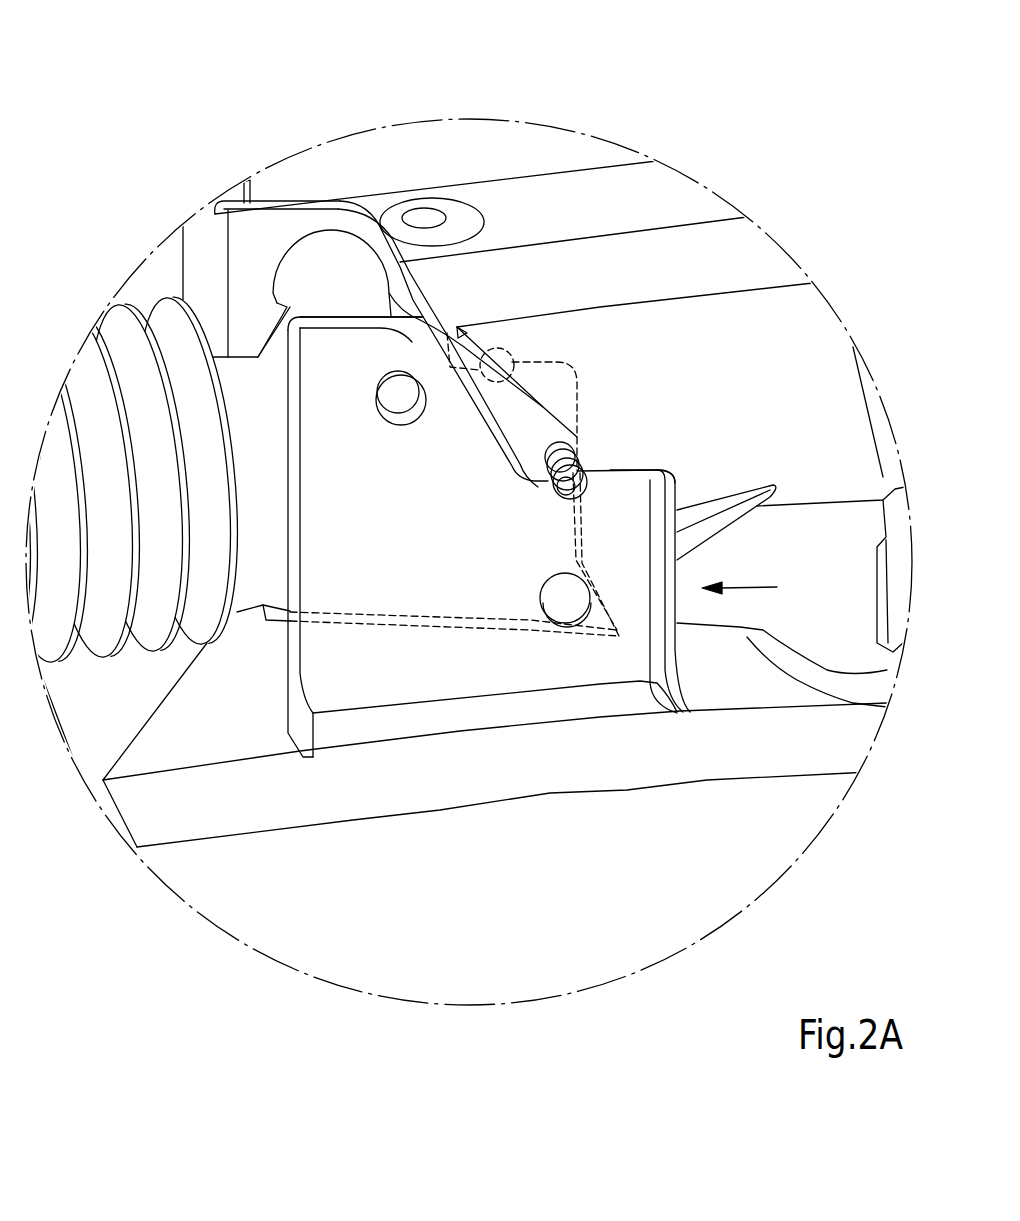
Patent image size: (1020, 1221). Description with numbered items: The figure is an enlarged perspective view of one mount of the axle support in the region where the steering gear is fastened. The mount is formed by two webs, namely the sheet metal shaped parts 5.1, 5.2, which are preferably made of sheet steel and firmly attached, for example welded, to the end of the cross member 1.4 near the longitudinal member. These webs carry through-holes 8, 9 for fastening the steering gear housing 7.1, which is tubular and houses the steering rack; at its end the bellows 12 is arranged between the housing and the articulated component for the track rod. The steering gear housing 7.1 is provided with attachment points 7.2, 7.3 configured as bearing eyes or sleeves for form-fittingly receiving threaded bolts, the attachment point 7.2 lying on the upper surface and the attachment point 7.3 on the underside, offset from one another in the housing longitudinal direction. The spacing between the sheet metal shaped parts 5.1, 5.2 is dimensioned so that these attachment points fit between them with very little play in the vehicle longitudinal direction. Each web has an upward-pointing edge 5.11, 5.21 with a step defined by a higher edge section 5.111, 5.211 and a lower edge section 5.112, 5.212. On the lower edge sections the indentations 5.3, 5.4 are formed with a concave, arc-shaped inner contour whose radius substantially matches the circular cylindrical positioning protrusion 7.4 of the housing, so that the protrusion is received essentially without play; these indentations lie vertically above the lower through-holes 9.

The cross member 1.4 is at (352, 953).
The sheet metal shaped part 5.1 is at (378, 670).
The upward-pointing edge 5.11 is at (657, 467).
The higher edge section 5.111 is at (367, 313).
The lower edge section 5.112 is at (613, 470).
The sheet metal shaped part 5.2 is at (253, 252).
The upward-pointing edge 5.21 is at (360, 205).
The higher edge section 5.211 is at (280, 200).
The lower edge section 5.212 is at (510, 352).
The indentation 5.3 is at (558, 481).
The indentation 5.4 is at (543, 410).
The steering gear housing 7.1 is at (830, 403).
The attachment point 7.2 is at (345, 260).
The attachment point 7.3 is at (759, 586).
The positioning protrusion 7.4 is at (567, 487).
The through-hole 8 is at (404, 392).
The through-hole 9 is at (563, 600).
The bellows 12 is at (125, 332).